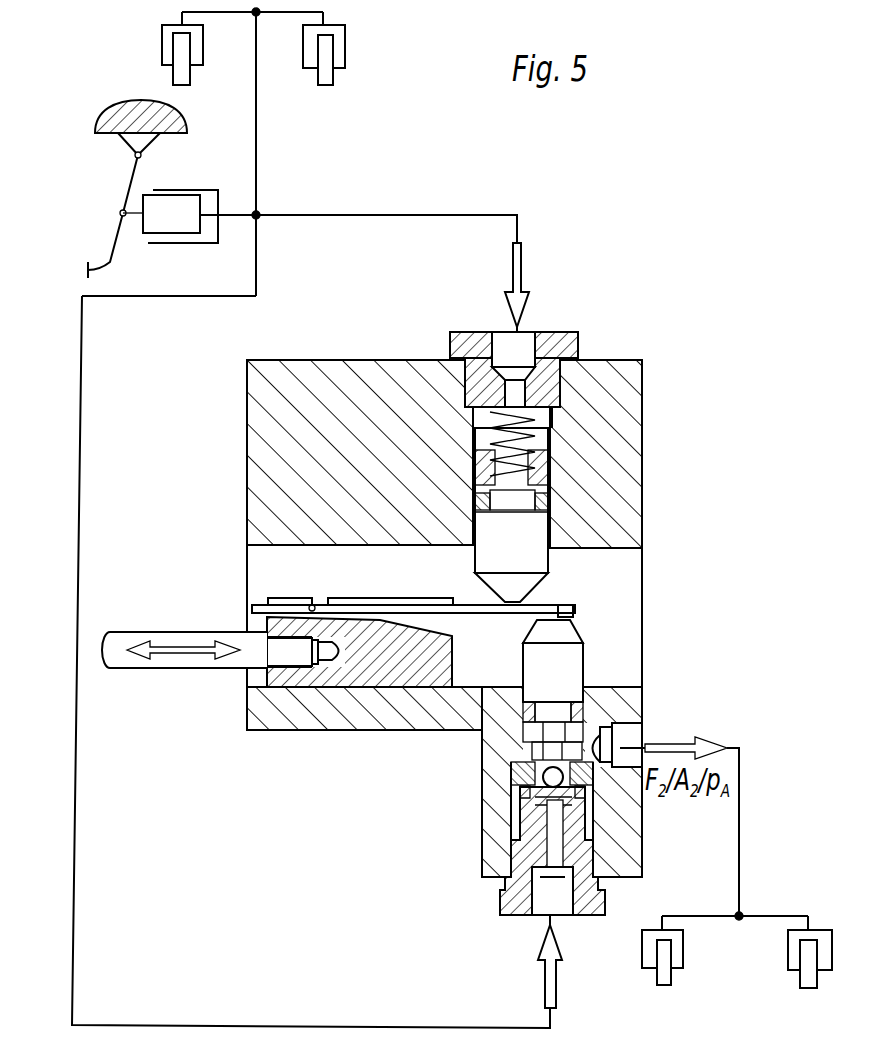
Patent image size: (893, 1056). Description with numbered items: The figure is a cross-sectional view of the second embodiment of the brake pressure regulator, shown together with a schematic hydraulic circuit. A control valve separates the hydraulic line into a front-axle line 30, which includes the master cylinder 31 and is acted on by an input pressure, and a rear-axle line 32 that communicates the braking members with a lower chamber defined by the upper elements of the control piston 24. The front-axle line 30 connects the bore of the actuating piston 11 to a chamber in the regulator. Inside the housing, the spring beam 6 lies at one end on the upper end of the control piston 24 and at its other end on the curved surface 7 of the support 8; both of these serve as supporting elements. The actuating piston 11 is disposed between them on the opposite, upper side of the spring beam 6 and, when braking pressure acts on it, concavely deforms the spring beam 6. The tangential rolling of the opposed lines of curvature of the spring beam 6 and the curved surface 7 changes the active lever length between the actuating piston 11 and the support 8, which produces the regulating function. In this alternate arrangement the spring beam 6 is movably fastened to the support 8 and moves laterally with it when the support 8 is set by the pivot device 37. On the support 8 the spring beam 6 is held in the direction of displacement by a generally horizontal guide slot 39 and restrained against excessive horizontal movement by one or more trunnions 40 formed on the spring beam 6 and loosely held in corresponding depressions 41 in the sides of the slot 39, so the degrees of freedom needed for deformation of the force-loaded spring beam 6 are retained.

The spring beam 6 is at (575, 610).
The curved surface 7 is at (416, 625).
The support 8 is at (371, 640).
The actuating piston 11 is at (490, 524).
The control piston 24 is at (563, 675).
The front-axle line 30 is at (284, 32).
The master cylinder 31 is at (206, 228).
The rear-axle line 32 is at (728, 831).
The pivot device 37 is at (215, 632).
The guide slot 39 is at (535, 622).
The trunnion 40 is at (313, 660).
The depression 41 is at (312, 605).